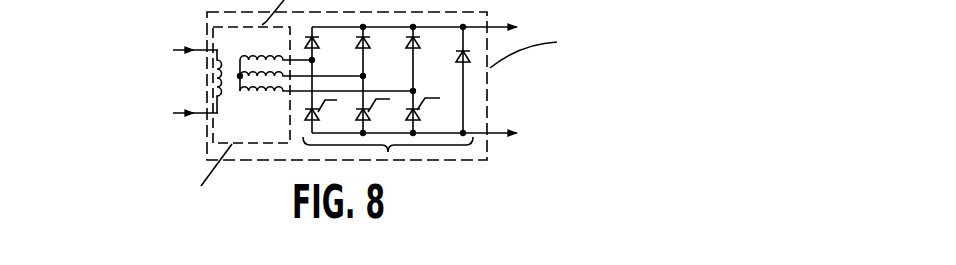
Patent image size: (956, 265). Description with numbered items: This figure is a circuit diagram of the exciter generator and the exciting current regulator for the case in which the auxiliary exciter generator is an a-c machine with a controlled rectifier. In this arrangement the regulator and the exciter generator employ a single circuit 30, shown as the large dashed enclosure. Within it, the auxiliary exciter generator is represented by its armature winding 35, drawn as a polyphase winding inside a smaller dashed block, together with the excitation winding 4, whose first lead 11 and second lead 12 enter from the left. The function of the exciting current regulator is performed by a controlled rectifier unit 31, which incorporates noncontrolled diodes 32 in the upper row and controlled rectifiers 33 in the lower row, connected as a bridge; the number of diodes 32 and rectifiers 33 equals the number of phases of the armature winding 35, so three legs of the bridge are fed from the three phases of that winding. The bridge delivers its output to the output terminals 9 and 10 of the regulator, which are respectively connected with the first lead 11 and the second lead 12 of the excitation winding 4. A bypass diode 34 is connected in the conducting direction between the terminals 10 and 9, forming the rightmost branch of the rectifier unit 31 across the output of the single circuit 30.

The excitation winding 4 is at (226, 68).
The output terminal 9 is at (519, 27).
The output terminal 10 is at (519, 133).
The first lead 11 is at (187, 49).
The second lead 12 is at (187, 114).
The single circuit 30 is at (489, 78).
The controlled rectifier unit 31 is at (313, 149).
The noncontrolled diodes 32 is at (318, 45).
The controlled rectifiers 33 is at (319, 116).
The bypass diode 34 is at (456, 53).
The armature winding 35 is at (226, 97).